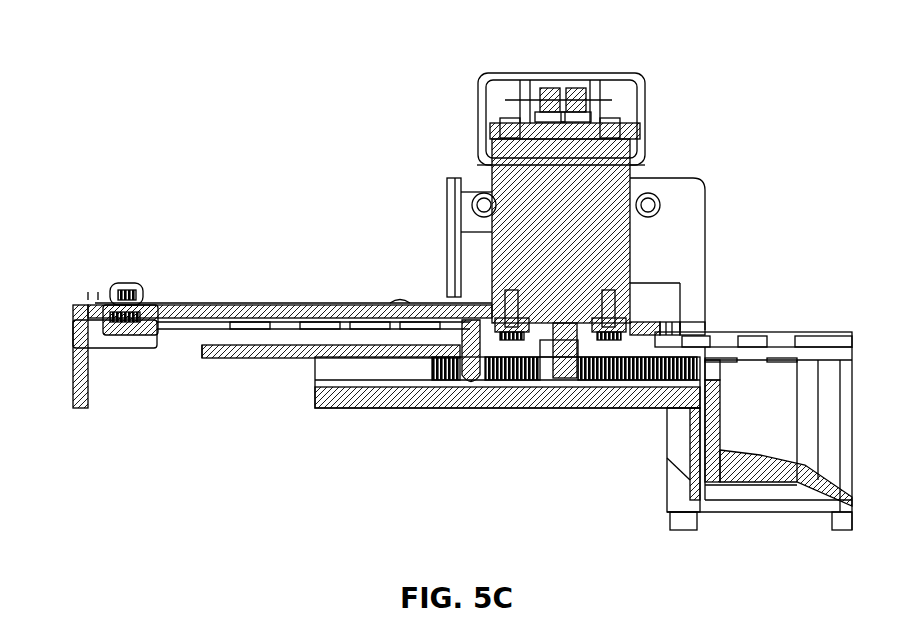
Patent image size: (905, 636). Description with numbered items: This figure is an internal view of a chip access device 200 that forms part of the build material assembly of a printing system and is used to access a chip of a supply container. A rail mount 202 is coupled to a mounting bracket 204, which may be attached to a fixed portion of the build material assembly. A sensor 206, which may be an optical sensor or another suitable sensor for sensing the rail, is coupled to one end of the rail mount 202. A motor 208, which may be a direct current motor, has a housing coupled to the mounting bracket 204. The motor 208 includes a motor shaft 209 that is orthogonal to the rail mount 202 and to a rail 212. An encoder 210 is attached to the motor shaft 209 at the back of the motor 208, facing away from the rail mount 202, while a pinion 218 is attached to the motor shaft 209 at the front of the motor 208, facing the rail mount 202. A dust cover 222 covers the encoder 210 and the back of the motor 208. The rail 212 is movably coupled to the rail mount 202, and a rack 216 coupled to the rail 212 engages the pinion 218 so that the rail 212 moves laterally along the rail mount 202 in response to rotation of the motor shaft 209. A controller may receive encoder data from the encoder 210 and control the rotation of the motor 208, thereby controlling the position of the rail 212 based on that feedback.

The chip access device 200 is at (255, 80).
The rail mount 202 is at (268, 298).
The mounting bracket 204 is at (677, 178).
The sensor 206 is at (85, 300).
The motor 208 is at (568, 222).
The motor shaft 209 is at (555, 98).
The encoder 210 is at (608, 98).
The rail 212 is at (340, 400).
The rack 216 is at (640, 370).
The pinion 218 is at (543, 375).
The dust cover 222 is at (488, 76).